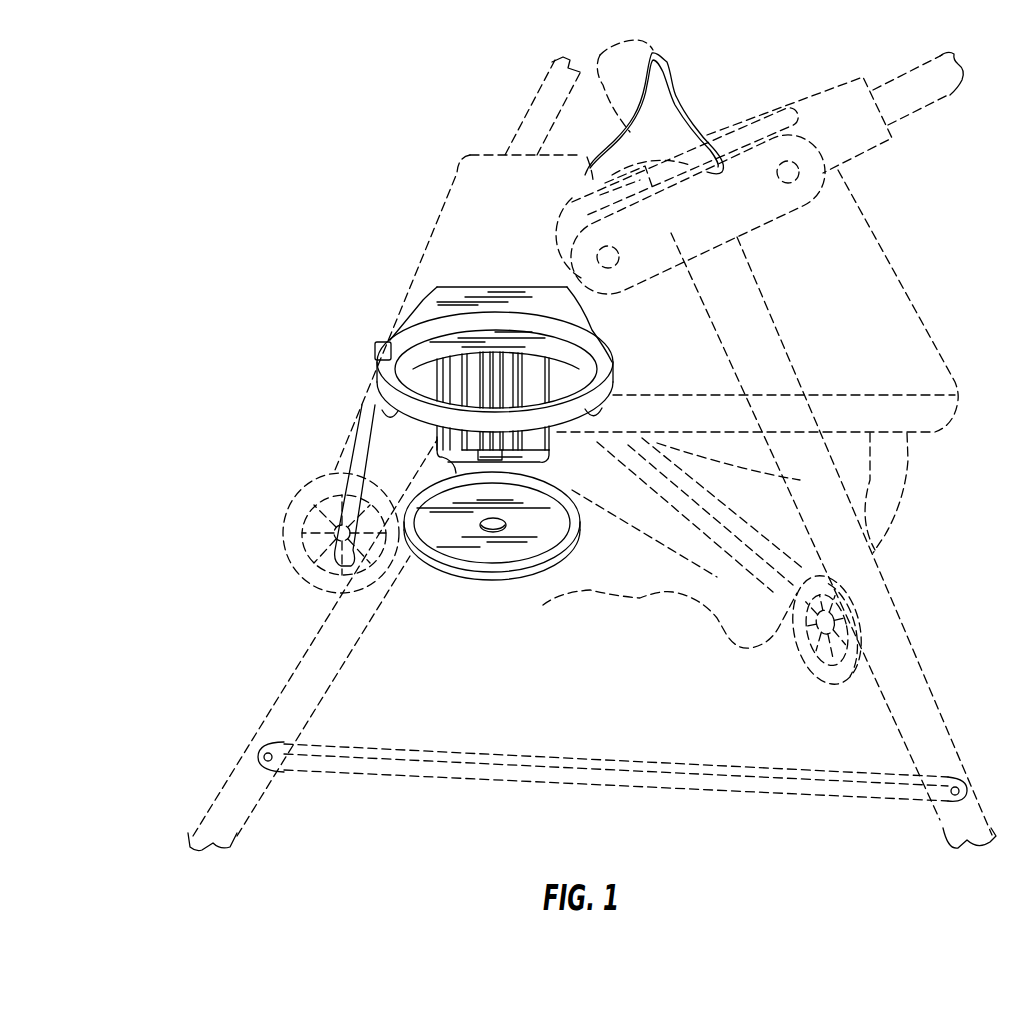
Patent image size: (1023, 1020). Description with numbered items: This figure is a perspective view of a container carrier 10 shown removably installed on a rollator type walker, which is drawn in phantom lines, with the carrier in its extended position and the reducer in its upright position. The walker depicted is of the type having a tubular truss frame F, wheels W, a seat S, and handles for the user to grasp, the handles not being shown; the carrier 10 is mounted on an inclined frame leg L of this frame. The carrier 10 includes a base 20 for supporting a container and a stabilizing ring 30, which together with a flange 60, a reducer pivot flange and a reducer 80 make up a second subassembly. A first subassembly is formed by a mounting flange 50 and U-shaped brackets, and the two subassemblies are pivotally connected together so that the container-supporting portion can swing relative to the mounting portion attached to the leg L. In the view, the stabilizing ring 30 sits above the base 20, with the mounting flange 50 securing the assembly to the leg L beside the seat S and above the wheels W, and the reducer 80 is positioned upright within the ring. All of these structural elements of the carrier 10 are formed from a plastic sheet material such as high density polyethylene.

The container carrier 10 is at (314, 320).
The base 20 is at (403, 492).
The stabilizing ring 30 is at (380, 341).
The mounting flange 50 is at (455, 438).
The flange 60 is at (562, 455).
The reducer 80 is at (376, 368).
The seat S is at (885, 307).
The tubular truss frame F is at (890, 637).
The inclined frame leg L is at (333, 651).
The wheels W is at (812, 668).